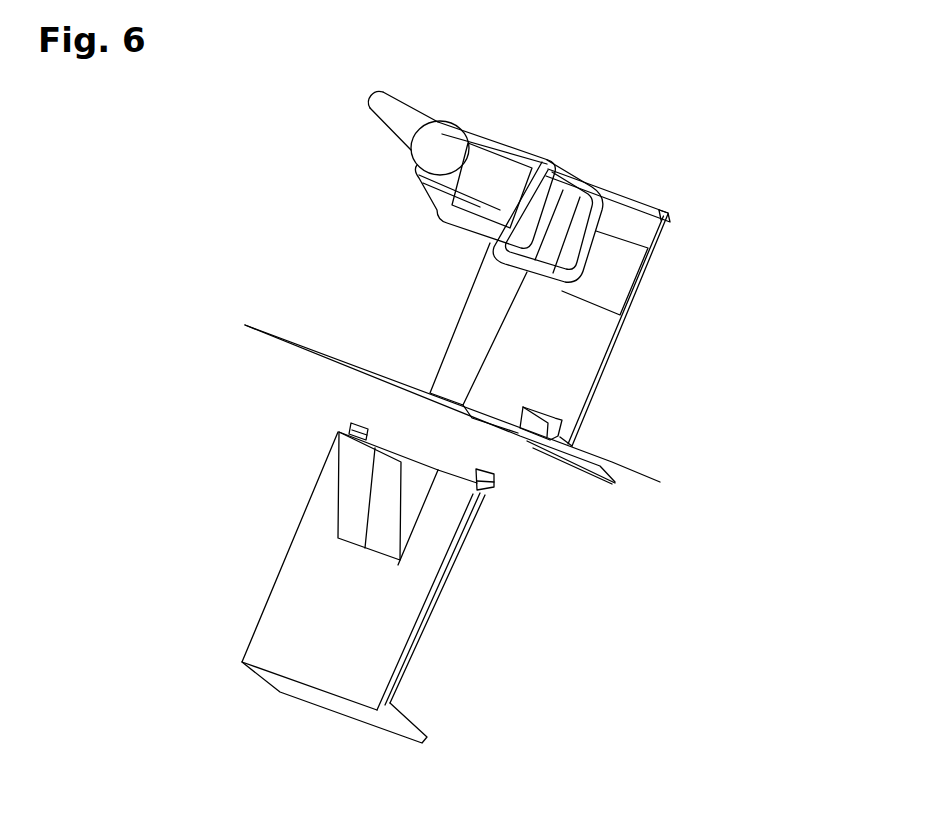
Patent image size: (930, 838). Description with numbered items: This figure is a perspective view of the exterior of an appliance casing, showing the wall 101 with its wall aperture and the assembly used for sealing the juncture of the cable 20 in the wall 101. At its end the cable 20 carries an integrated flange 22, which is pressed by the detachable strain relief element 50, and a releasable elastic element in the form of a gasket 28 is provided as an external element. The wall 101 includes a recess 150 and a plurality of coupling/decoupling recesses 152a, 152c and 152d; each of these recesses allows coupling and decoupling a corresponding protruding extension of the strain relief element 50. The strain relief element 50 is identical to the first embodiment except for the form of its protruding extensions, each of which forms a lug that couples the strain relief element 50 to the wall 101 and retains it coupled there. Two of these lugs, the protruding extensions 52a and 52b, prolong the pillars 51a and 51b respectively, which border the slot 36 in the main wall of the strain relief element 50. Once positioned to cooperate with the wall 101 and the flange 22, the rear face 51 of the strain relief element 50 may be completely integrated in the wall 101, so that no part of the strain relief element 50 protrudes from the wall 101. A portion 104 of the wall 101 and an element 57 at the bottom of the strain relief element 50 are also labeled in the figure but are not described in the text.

The cable 20 is at (389, 152).
The flange 22 is at (528, 152).
The gasket 28 is at (572, 184).
The slot 36 is at (385, 537).
The strain relief element 50 is at (422, 662).
The rear face 51 is at (285, 625).
The pillar 51a is at (422, 552).
The pillar 51b is at (327, 486).
The protruding extension 52a is at (492, 487).
The protruding extension 52b is at (350, 425).
The base plate 57 is at (365, 718).
The wall 101 is at (650, 342).
The recess 104 is at (618, 270).
The recess 150 is at (598, 366).
The coupling/decoupling recess 152a is at (672, 218).
The coupling/decoupling recess 152c is at (555, 417).
The coupling/decoupling recess 152d is at (562, 472).